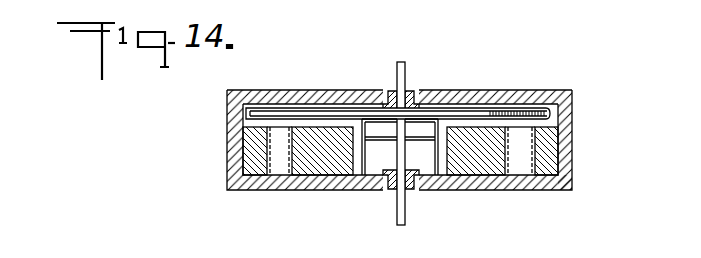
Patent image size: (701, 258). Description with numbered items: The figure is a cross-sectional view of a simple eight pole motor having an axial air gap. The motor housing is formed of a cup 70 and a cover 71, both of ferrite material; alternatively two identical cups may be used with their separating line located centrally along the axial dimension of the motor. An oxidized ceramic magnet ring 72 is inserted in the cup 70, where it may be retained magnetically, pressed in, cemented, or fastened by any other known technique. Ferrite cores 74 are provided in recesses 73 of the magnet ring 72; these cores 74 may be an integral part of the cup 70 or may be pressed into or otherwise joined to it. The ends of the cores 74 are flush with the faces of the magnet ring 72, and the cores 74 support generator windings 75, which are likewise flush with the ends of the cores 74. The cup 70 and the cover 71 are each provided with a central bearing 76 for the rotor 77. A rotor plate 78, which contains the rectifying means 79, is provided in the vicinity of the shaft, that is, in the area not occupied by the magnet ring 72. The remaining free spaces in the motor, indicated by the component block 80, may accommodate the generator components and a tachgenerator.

The cup 70 is at (235, 178).
The cover 71 is at (253, 92).
The magnet ring 72 is at (547, 163).
The recesses 73 is at (247, 140).
The ferrite cores 74 is at (282, 167).
The generator windings 75 is at (301, 157).
The central bearings 76 is at (412, 93).
The rotor 77 is at (396, 208).
The rotor plate 78 is at (497, 111).
The rectifying means 79 is at (427, 124).
The component block 80 is at (430, 163).